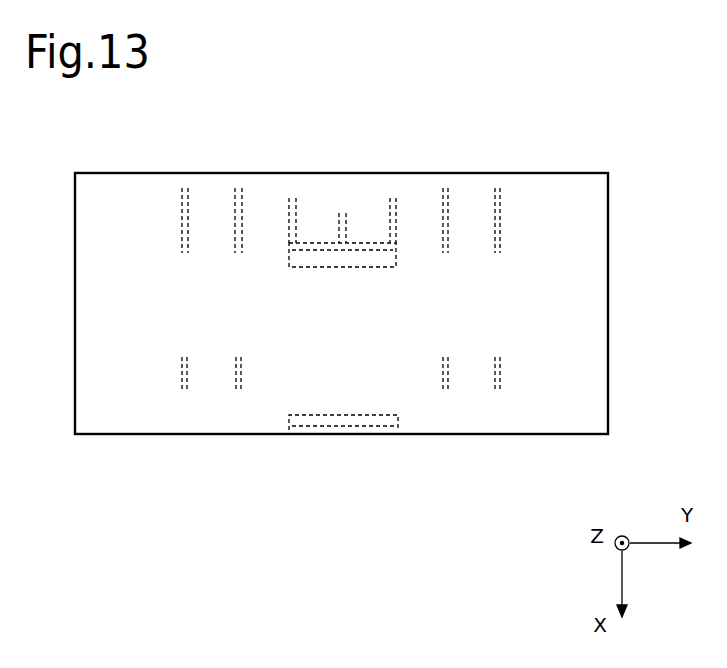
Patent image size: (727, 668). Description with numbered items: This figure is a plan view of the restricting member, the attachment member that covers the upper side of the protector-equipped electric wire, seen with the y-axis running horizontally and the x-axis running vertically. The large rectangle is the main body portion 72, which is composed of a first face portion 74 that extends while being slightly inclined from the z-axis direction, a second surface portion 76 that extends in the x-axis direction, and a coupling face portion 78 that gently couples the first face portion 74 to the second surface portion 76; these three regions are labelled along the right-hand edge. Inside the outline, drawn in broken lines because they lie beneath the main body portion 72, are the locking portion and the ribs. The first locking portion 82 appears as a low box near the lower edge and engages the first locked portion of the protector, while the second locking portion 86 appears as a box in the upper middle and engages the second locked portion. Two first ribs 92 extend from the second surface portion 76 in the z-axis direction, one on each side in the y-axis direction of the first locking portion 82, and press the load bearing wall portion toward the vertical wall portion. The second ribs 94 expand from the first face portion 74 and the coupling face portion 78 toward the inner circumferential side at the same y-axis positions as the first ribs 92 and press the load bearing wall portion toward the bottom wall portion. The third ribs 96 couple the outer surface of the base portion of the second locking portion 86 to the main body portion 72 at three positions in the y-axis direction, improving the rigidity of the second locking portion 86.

The main body portion 72 is at (353, 173).
The first face portion 74 is at (597, 185).
The second surface portion 76 is at (597, 332).
The coupling face portion 78 is at (597, 242).
The first locking portion 82 is at (398, 418).
The second locking portion 86 is at (323, 267).
The first ribs 92 is at (187, 388).
The second ribs 94 is at (237, 215).
The third ribs 96 is at (341, 214).